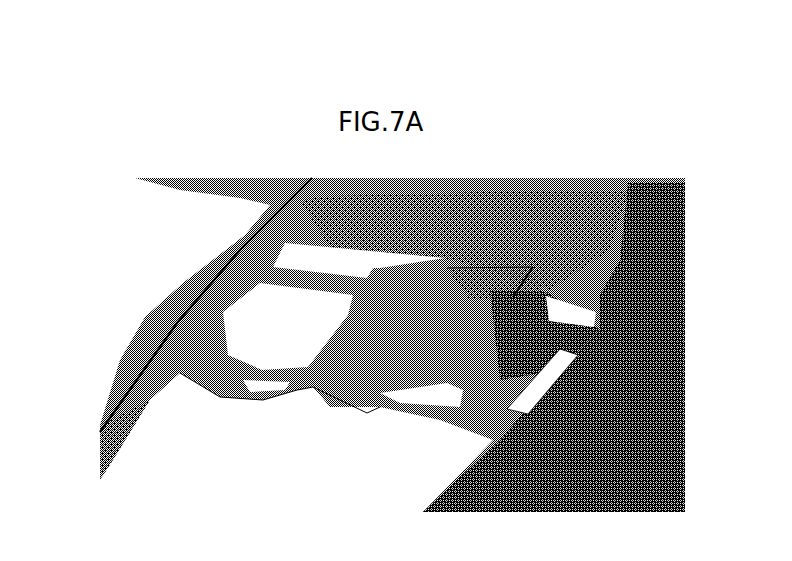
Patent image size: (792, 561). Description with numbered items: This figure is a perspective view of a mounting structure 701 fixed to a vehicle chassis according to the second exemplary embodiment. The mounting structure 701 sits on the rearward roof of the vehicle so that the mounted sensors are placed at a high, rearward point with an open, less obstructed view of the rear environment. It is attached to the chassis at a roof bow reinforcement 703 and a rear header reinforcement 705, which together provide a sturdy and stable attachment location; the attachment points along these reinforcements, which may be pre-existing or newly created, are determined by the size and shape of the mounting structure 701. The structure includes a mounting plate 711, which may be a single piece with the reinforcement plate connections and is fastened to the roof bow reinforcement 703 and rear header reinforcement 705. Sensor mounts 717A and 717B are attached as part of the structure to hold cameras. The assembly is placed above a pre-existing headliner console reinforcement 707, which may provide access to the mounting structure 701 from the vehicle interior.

The mounting structure 701 is at (563, 270).
The roof bow reinforcement 703 is at (177, 327).
The rear header reinforcement 705 is at (610, 285).
The headliner console reinforcement 707 is at (380, 405).
The mounting plate 711 is at (513, 373).
The sensor mount 717A is at (477, 267).
The sensor mount 717B is at (410, 373).